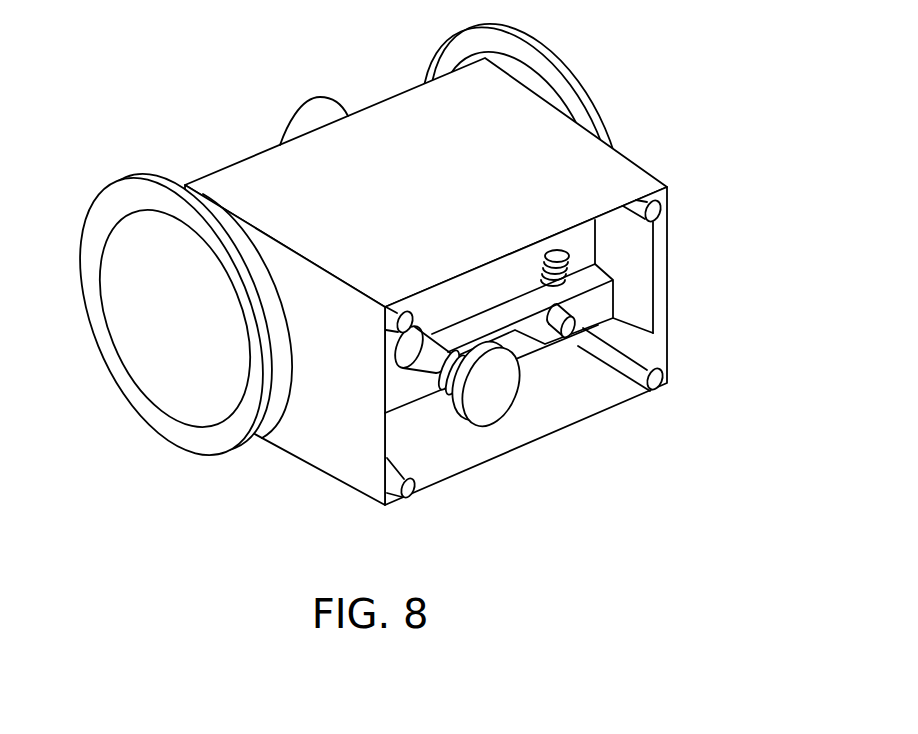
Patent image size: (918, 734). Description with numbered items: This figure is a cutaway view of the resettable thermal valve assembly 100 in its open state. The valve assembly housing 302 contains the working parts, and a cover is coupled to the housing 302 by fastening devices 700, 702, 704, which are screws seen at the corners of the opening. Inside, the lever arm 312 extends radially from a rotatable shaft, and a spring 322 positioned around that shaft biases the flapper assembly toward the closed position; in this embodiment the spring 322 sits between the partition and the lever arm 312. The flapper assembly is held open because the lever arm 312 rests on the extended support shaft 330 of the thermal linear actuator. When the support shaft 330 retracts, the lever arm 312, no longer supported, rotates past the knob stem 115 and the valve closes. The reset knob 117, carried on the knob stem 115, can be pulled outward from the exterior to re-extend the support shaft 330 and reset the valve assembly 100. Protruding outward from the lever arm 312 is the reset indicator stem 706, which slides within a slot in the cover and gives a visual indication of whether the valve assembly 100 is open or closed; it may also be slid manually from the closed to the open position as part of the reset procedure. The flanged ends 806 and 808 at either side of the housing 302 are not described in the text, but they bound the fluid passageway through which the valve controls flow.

The resettable thermal valve assembly 100 is at (695, 31).
The valve assembly housing 302 is at (391, 99).
The lever arm 312 is at (600, 276).
The spring 322 is at (553, 256).
The support shaft 330 is at (397, 365).
The knob stem 115 is at (447, 390).
The reset knob 117 is at (493, 414).
The fastening device 700 is at (411, 499).
The fastening device 702 is at (655, 390).
The fastening device 704 is at (663, 212).
The reset indicator stem 706 is at (388, 314).
The front flange ring 806 is at (100, 309).
The rear flange ring 808 is at (631, 149).